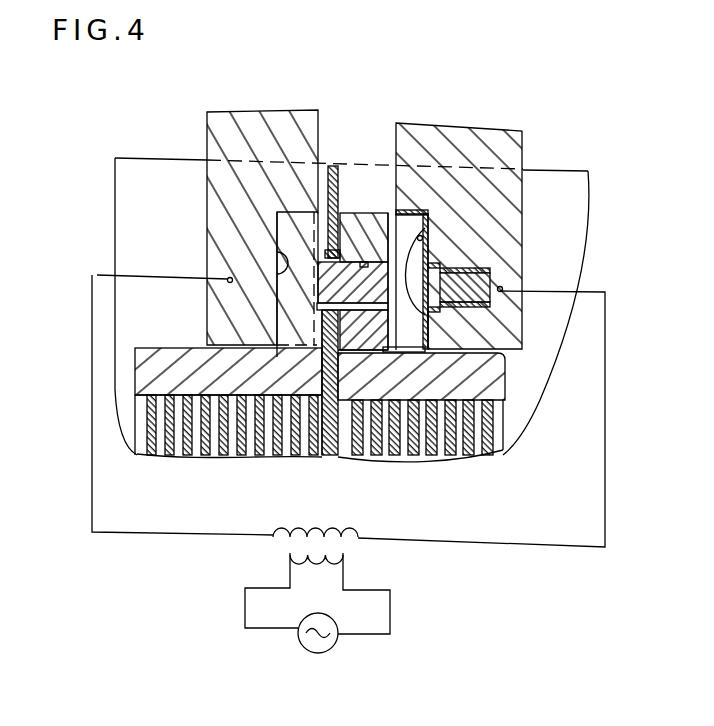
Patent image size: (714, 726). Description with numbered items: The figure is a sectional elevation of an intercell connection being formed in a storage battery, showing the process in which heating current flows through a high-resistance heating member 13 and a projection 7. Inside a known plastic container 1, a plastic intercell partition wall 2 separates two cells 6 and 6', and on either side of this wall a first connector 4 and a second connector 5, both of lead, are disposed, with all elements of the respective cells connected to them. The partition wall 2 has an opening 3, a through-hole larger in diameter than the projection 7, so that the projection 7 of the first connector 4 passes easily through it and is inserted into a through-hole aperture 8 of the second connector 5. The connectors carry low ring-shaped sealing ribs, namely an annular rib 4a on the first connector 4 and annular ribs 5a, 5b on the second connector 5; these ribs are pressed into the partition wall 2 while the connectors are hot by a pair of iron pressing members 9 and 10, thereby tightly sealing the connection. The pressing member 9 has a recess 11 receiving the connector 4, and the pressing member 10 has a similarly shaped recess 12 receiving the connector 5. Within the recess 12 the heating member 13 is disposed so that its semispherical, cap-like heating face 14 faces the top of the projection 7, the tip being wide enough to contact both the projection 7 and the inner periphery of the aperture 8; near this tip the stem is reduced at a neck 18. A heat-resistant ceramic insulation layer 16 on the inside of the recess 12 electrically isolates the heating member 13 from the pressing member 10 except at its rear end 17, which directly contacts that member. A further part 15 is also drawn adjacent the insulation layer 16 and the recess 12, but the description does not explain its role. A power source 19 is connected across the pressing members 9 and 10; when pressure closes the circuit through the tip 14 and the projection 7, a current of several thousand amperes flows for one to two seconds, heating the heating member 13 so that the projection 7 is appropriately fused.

The plastic container 1 is at (176, 250).
The intercell partition wall 2 is at (333, 167).
The opening 3 is at (318, 299).
The first connector 4 is at (300, 325).
The annular rib 4a is at (318, 318).
The second connector 5 is at (410, 352).
The annular rib 5a is at (345, 318).
The annular rib 5b is at (336, 318).
The cell 6 is at (187, 413).
The cell 6' is at (444, 428).
The projection 7 is at (347, 250).
The through-hole aperture 8 is at (374, 262).
The pressing member 9 is at (232, 147).
The pressing member 10 is at (493, 146).
The recess 11 is at (276, 262).
The recess 12 is at (424, 239).
The heating member 13 is at (450, 282).
The heating face 14 is at (430, 322).
The plate 15 is at (428, 215).
The insulation layer 16 is at (413, 222).
The rear end 17 is at (465, 302).
The neck 18 is at (438, 304).
The power source 19 is at (280, 610).